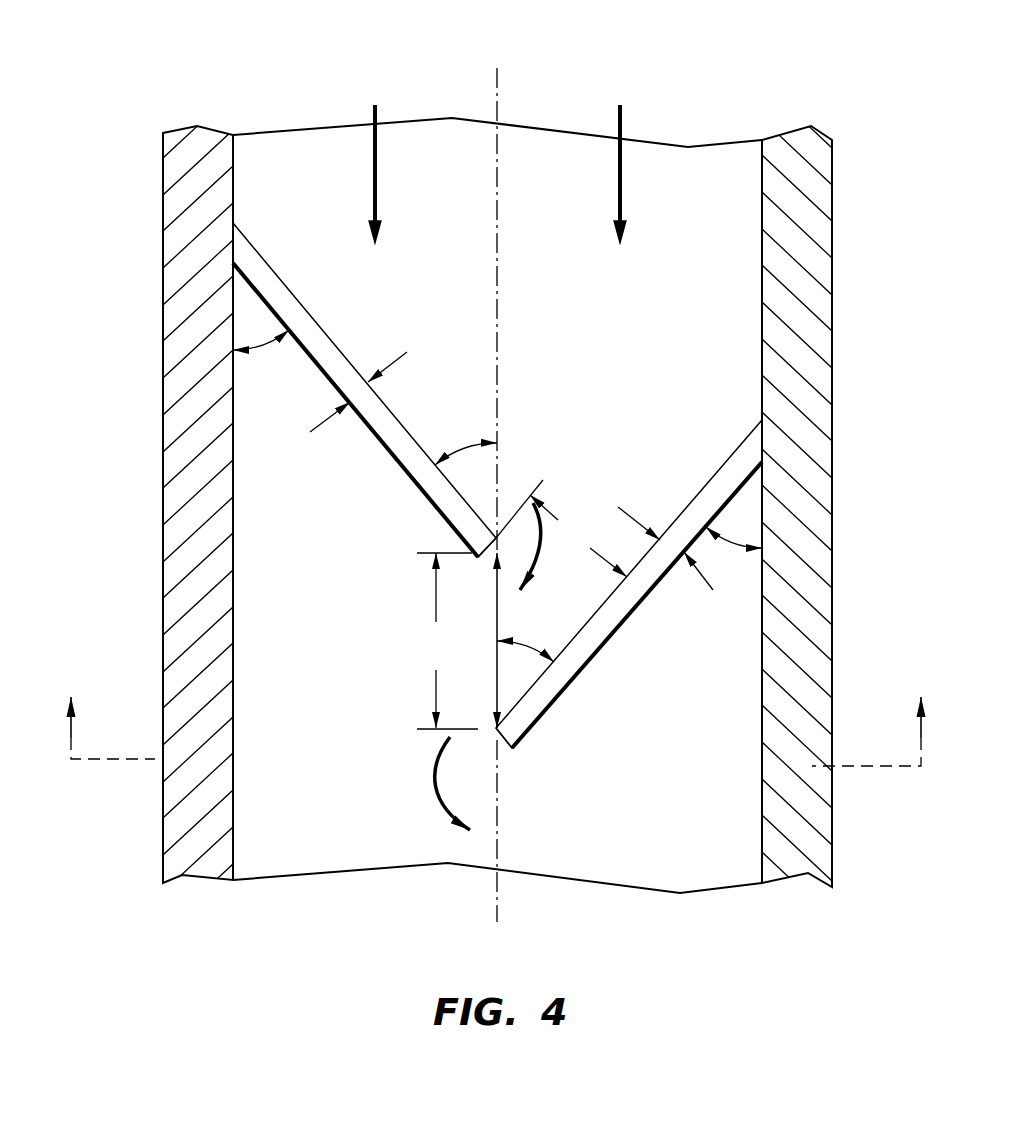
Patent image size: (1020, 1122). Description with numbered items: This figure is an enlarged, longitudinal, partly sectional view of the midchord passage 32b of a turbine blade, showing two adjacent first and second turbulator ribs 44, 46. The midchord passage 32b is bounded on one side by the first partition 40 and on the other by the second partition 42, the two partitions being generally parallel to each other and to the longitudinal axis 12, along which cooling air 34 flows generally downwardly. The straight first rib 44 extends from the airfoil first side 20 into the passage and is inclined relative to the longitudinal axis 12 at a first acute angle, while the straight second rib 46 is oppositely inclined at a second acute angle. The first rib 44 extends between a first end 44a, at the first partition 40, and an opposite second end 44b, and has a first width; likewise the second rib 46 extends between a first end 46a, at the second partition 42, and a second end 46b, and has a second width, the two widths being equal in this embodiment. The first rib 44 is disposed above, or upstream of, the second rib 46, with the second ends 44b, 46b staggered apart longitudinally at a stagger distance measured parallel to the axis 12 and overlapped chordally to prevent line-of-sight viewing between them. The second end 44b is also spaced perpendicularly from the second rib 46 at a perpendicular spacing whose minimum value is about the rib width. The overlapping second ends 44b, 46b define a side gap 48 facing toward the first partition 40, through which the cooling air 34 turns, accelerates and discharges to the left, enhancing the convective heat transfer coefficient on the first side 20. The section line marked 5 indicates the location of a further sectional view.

The longitudinal axis 12 is at (500, 97).
The first side 20 is at (272, 850).
The midchord passage 32b is at (690, 732).
The cooling air 34 is at (622, 183).
The first partition 40 is at (163, 462).
The second partition 42 is at (832, 462).
The first turbulator rib 44 is at (281, 275).
The first end of first rib 44a is at (233, 252).
The second end of first rib 44b is at (495, 538).
The second turbulator rib 46 is at (716, 475).
The first end of second rib 46a is at (750, 438).
The second end of second rib 46b is at (500, 731).
The side gap 48 is at (495, 600).
The section line 5- 5 is at (496, 719).